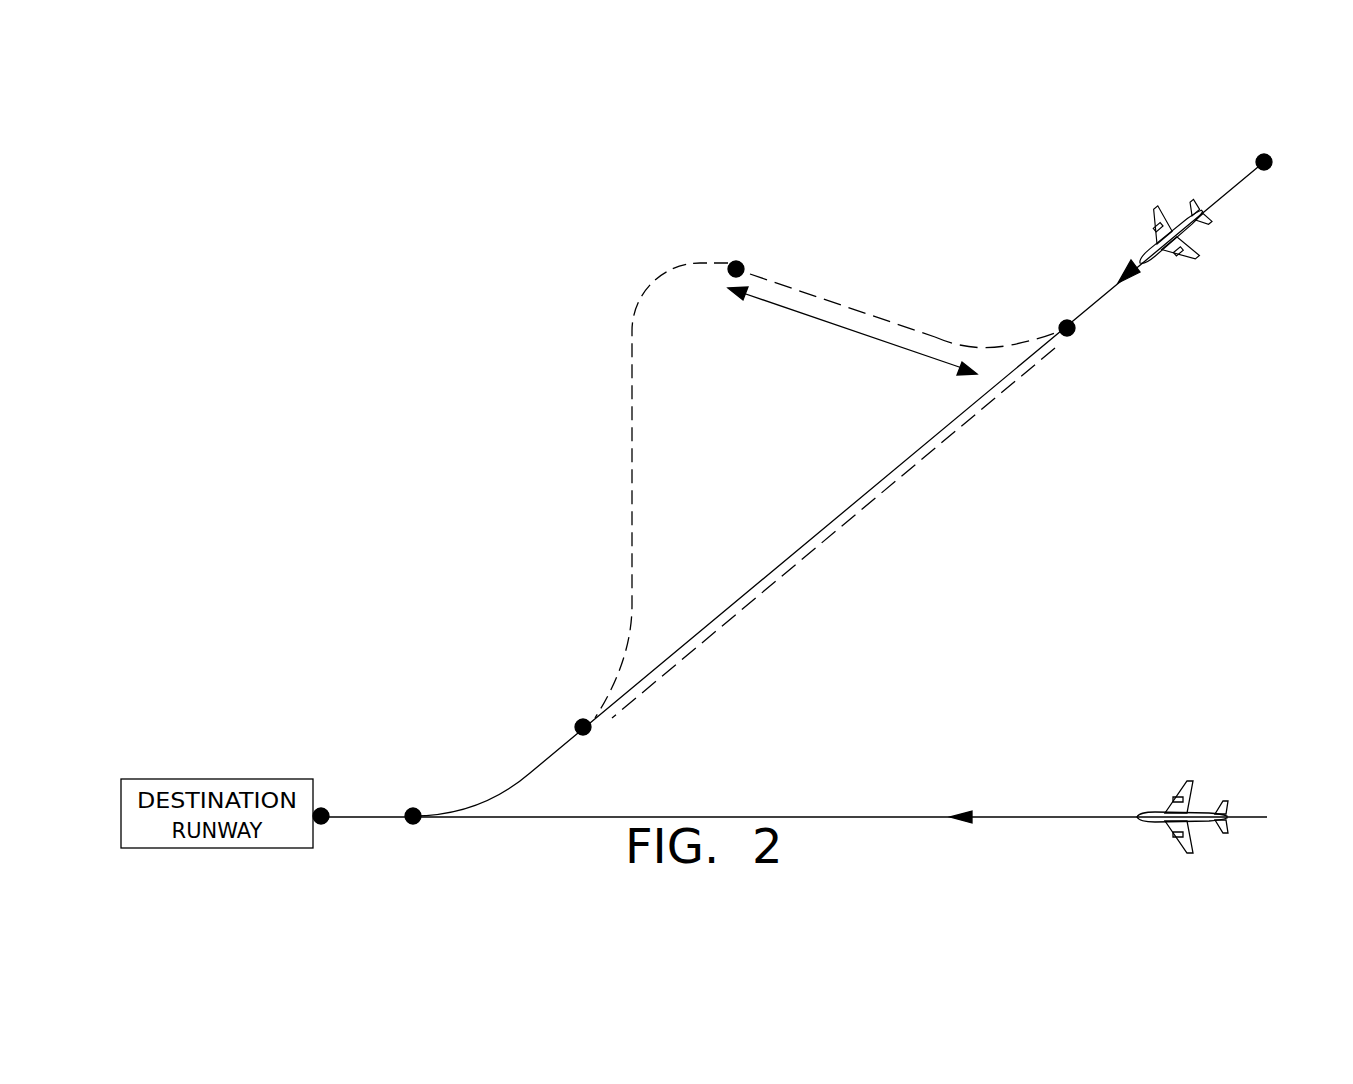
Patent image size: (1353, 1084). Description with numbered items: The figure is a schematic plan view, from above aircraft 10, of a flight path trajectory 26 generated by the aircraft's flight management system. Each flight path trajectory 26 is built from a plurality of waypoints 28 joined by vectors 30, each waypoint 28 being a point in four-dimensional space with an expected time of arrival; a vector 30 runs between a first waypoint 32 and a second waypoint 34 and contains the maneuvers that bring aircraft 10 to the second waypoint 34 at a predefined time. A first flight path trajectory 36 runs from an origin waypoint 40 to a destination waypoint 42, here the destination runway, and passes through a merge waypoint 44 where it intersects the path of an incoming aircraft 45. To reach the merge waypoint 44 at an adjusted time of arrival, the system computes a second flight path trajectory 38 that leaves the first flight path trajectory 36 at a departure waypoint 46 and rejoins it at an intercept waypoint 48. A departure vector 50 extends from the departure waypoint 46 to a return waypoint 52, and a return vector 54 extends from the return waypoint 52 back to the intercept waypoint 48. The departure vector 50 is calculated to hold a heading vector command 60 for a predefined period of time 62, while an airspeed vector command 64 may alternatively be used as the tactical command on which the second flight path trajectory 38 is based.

The aircraft 10 is at (1178, 228).
The flight path trajectory 26 is at (952, 211).
The waypoint 28 is at (815, 473).
The vector 30 is at (794, 492).
The first waypoint 32 is at (1280, 187).
The second waypoint 34 is at (372, 781).
The first flight path trajectory 36 is at (1120, 308).
The second flight path trajectory 38 is at (832, 262).
The origin waypoint 40 is at (1252, 178).
The destination waypoint 42 is at (325, 808).
The merge waypoint 44 is at (418, 808).
The incoming aircraft 45 is at (1192, 814).
The departure waypoint 46 is at (1077, 327).
The intercept waypoint 48 is at (590, 733).
The departure vector 50 is at (945, 340).
The return waypoint 52 is at (730, 262).
The return vector 54 is at (632, 392).
The heading vector command 60 is at (897, 325).
The predefined period of time 62 is at (840, 335).
The airspeed vector command 64 is at (930, 453).